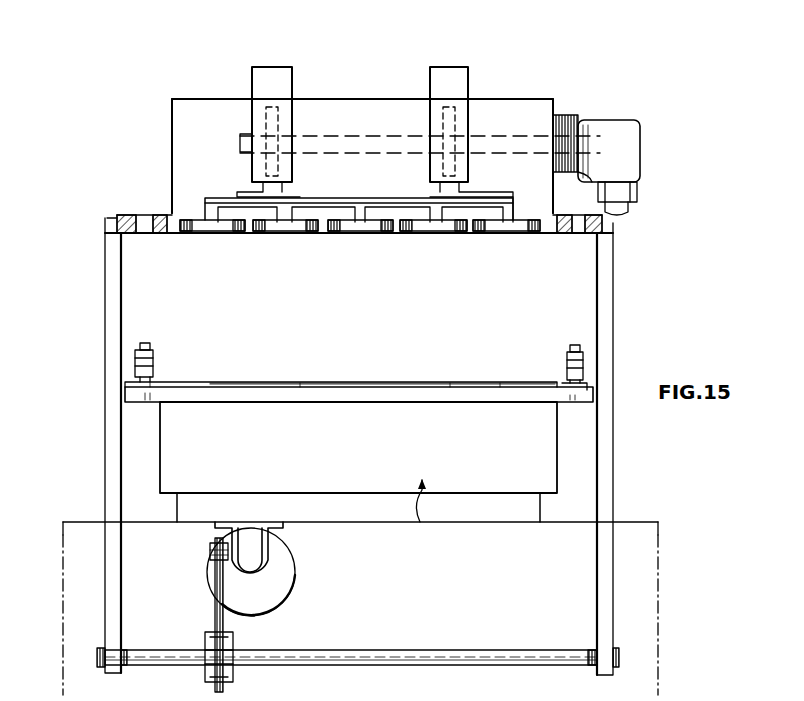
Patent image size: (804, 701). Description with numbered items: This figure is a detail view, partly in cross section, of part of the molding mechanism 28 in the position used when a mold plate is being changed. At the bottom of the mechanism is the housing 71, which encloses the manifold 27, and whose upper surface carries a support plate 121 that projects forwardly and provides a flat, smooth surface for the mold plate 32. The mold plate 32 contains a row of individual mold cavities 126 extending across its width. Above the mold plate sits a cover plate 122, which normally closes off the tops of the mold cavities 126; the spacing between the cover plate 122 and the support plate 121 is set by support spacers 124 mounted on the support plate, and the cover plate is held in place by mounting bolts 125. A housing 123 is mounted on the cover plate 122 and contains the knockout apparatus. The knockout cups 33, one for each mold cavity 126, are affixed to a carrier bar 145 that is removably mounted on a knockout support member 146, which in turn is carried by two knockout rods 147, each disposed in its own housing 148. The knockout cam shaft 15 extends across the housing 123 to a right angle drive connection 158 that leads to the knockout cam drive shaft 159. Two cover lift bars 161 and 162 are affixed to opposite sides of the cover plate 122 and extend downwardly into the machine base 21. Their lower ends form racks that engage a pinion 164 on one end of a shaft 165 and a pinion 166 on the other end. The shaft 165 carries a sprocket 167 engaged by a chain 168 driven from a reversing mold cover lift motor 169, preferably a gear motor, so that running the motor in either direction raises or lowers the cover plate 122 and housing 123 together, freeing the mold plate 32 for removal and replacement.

The shaft 15 is at (368, 140).
The machine base 21 is at (648, 544).
The manifold 27 is at (410, 517).
The molding mechanism 28 is at (552, 80).
The mold plate 32 is at (452, 383).
The knockout cups 33 is at (226, 232).
The housing 71 is at (560, 452).
The support plate 121 is at (318, 402).
The cover plate 122 is at (128, 215).
The housing 123 is at (214, 132).
The support spacers 124 is at (126, 387).
The mounting bolts 125 is at (153, 362).
The mold cavities 126 is at (375, 383).
The carrier bar 145 is at (490, 202).
The knockout support member 146 is at (398, 200).
The knockout rods 147 is at (262, 196).
The housing 148 is at (275, 78).
The right angle drive connection 158 is at (616, 125).
The knockout cam drive shaft 159 is at (625, 210).
The cover lift bar 161 is at (110, 320).
The cover lift bar 162 is at (614, 292).
The pinion 164 is at (615, 648).
The shaft 165 is at (516, 655).
The pinion 166 is at (120, 648).
The sprocket 167 is at (230, 640).
The chain 168 is at (218, 585).
The mold cover lift motor 169 is at (284, 572).